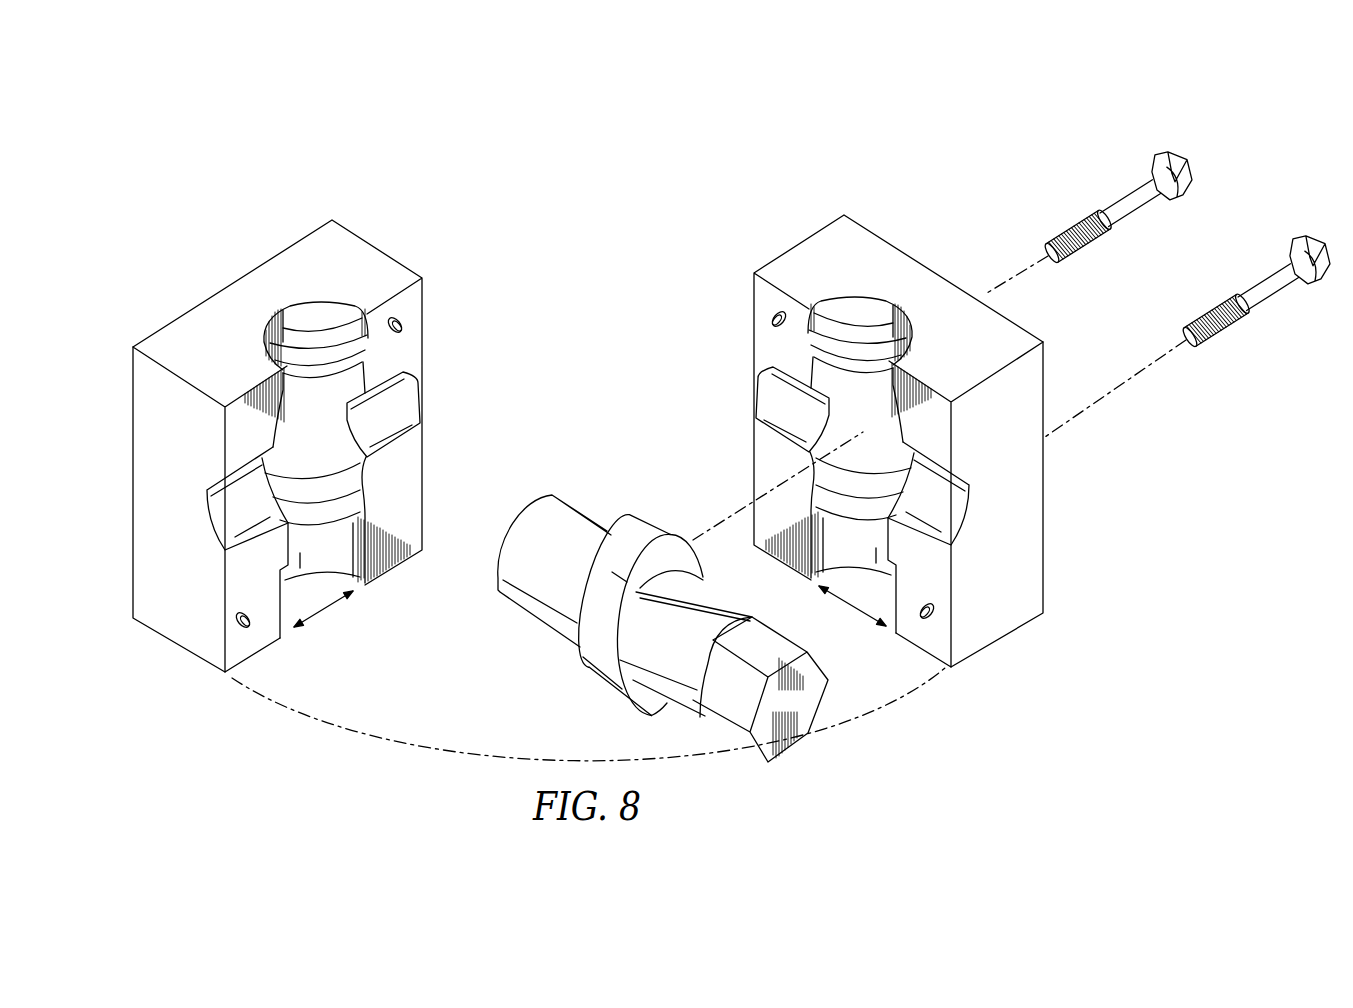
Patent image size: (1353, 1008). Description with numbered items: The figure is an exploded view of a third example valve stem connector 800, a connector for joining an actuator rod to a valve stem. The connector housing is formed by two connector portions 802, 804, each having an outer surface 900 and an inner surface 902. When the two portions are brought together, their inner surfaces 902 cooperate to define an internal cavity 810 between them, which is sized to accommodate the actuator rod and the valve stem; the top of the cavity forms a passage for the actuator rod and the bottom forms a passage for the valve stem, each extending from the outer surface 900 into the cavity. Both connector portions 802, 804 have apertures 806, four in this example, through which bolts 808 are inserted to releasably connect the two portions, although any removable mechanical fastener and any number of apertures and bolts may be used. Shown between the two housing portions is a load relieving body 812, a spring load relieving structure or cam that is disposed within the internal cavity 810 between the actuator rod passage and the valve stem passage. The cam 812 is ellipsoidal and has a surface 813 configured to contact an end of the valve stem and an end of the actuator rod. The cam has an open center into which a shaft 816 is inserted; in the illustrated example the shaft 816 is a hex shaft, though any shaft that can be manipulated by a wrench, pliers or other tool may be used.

The valve stem connector 800 is at (910, 157).
The connector portion 802 is at (233, 280).
The connector portion 804 is at (797, 248).
The apertures 806 is at (403, 330).
The bolts 808 is at (1137, 180).
The internal cavity 810 is at (326, 618).
The load relieving body 812 is at (660, 518).
The surface 813 is at (597, 597).
The shaft 816 is at (751, 760).
The outer surface 900 is at (133, 500).
The inner surface 902 is at (420, 470).